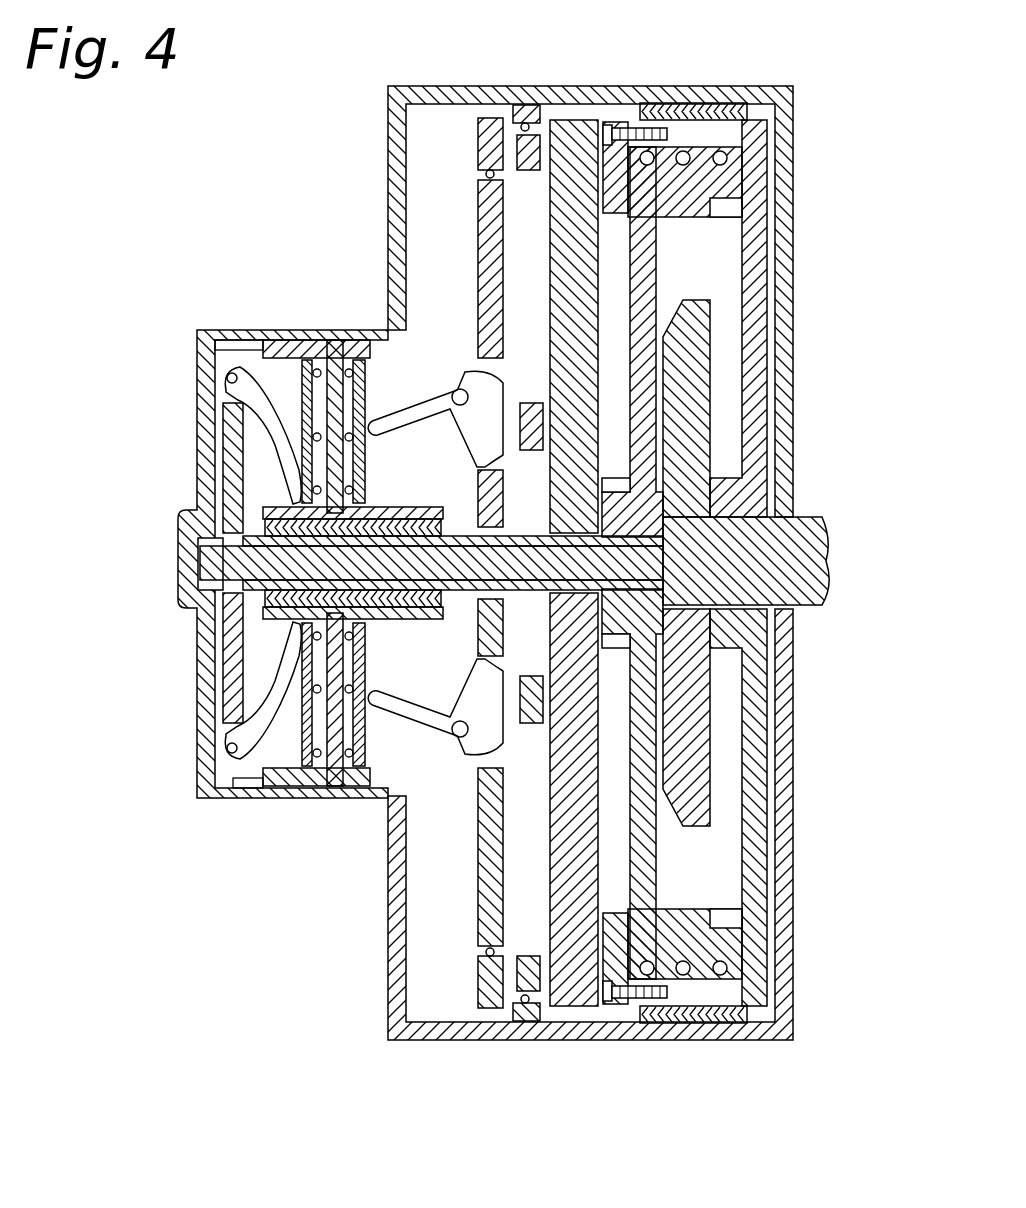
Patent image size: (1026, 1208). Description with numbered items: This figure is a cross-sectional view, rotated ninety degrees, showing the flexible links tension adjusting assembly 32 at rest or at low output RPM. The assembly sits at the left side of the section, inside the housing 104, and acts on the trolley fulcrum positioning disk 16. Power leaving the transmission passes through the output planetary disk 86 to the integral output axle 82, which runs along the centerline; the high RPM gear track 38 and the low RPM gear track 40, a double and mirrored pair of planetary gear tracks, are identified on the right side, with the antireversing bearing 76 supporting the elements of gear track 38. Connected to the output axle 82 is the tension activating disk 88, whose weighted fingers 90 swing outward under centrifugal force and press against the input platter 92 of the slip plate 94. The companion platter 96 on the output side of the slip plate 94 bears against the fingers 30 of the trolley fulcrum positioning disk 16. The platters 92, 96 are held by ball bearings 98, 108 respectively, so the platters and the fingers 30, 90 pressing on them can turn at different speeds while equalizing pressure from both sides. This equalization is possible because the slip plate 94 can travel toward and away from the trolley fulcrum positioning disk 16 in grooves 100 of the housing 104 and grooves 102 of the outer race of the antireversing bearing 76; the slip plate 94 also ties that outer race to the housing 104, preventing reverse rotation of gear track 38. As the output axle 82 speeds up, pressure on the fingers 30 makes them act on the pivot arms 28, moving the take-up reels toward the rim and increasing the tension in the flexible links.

The flexible links tension adjusting assembly 32 is at (168, 233).
The trolley fulcrum positioning disk 16 is at (480, 880).
The pivot arms 28 is at (523, 724).
The fingers 30 is at (472, 740).
The high RPM gear track 38 is at (643, 848).
The low RPM gear track 40 is at (753, 283).
The antireversing bearing 76 is at (178, 608).
The output axle 82 is at (225, 560).
The output planetary disk 86 is at (697, 712).
The tension activating disk 88 is at (233, 658).
The weighted fingers 90 is at (273, 430).
The input platter 92 is at (303, 720).
The slip plate 94 is at (247, 330).
The companion platter 96 is at (363, 340).
The ball bearing 98 is at (293, 335).
The grooves of the housing 100 is at (248, 782).
The grooves of the outer race 102 is at (262, 508).
The housing 104 is at (387, 915).
The ball bearing 108 is at (345, 345).